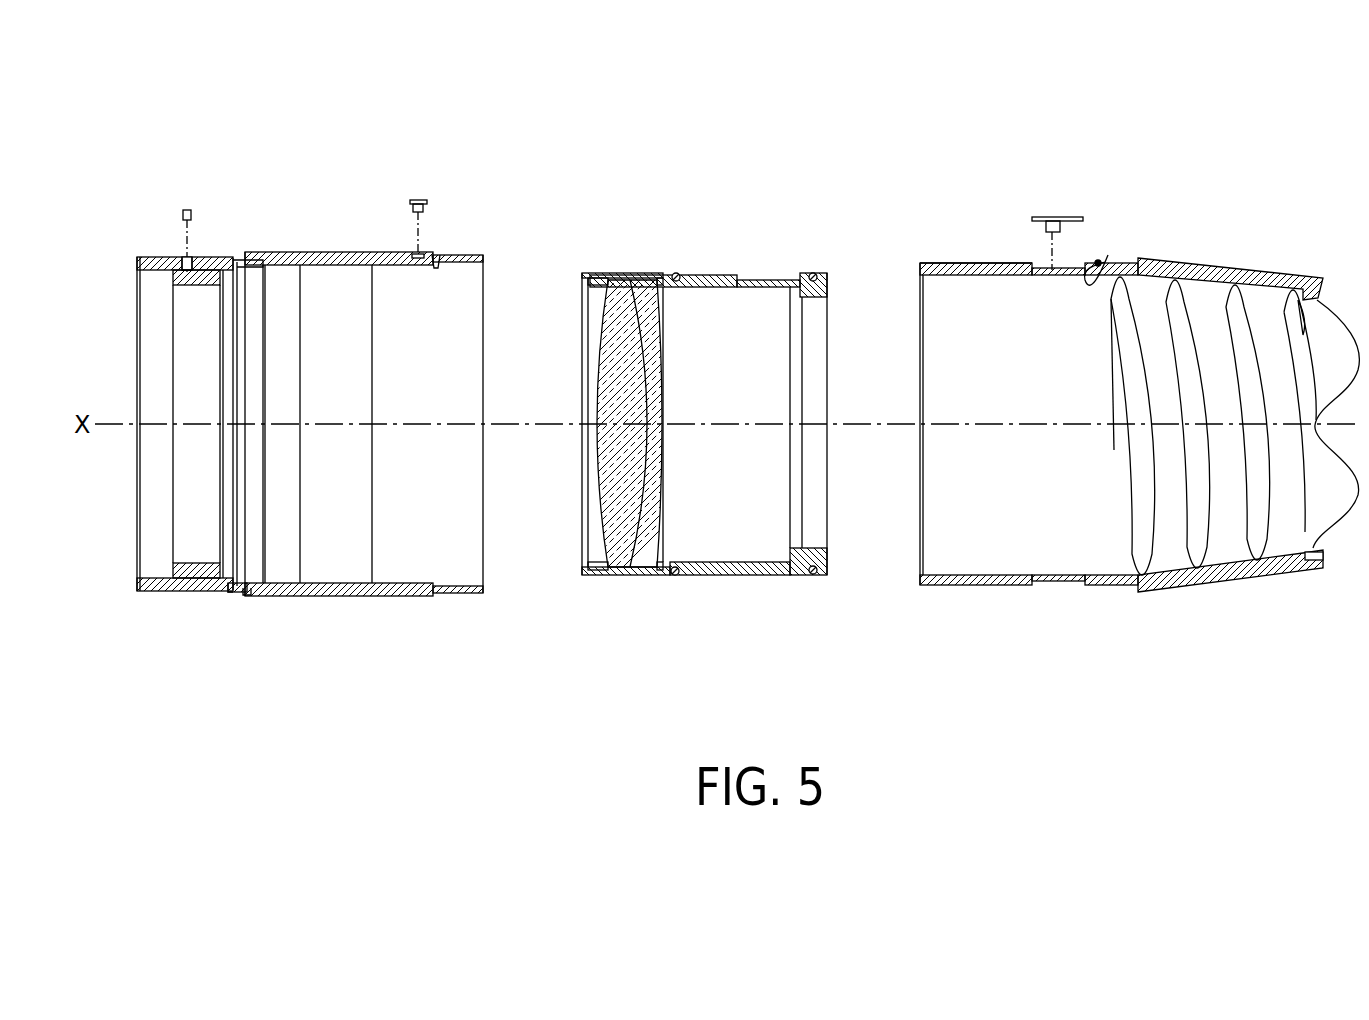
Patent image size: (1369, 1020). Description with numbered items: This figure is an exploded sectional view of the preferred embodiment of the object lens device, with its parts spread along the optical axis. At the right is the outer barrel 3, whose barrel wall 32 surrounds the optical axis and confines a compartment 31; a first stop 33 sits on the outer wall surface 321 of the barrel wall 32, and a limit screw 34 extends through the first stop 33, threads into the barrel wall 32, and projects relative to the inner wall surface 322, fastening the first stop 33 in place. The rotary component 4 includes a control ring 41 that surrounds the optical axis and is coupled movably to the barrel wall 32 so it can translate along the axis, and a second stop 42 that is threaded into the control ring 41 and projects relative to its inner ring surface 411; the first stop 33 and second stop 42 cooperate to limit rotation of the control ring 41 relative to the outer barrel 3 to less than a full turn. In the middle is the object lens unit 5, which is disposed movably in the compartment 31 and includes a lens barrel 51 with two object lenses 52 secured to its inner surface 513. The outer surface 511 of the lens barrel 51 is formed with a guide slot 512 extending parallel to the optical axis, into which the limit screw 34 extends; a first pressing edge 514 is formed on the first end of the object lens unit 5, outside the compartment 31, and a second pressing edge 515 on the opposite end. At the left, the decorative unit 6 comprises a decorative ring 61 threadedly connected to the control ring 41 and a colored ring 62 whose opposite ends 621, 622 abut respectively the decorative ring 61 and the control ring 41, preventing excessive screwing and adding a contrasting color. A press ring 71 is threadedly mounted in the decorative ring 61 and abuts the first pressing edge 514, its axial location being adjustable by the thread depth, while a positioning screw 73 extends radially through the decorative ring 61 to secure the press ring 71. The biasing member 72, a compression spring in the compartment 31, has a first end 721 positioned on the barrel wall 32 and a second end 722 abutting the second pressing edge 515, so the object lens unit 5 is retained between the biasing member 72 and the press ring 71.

The outer barrel 3 is at (1185, 256).
The compartment 31 is at (958, 532).
The barrel wall 32 is at (1163, 578).
The outer wall surface 321 is at (968, 262).
The inner wall surface 322 is at (1100, 262).
The first stop 33 is at (1037, 216).
The limit screw 34 is at (1072, 217).
The rotary component 4 is at (279, 250).
The control ring 41 is at (330, 252).
The inner ring surface 411 is at (440, 263).
The second stop 42 is at (414, 198).
The object lens unit 5 is at (729, 272).
The lens barrel 51 is at (742, 576).
The outer surface 511 is at (683, 272).
The guide slot 512 is at (777, 272).
The inner surface 513 is at (650, 576).
The first pressing edge 514 is at (582, 300).
The second pressing edge 515 is at (829, 487).
The object lenses 52 is at (630, 569).
The decorative unit 6 is at (148, 255).
The decorative ring 61 is at (139, 592).
The colored ring 62 is at (236, 594).
The end 621 is at (230, 592).
The end 622 is at (247, 593).
The press ring 71 is at (176, 580).
The biasing member 72 is at (1252, 512).
The first end 721 is at (1303, 288).
The second end 722 is at (1127, 450).
The positioning screw 73 is at (185, 207).